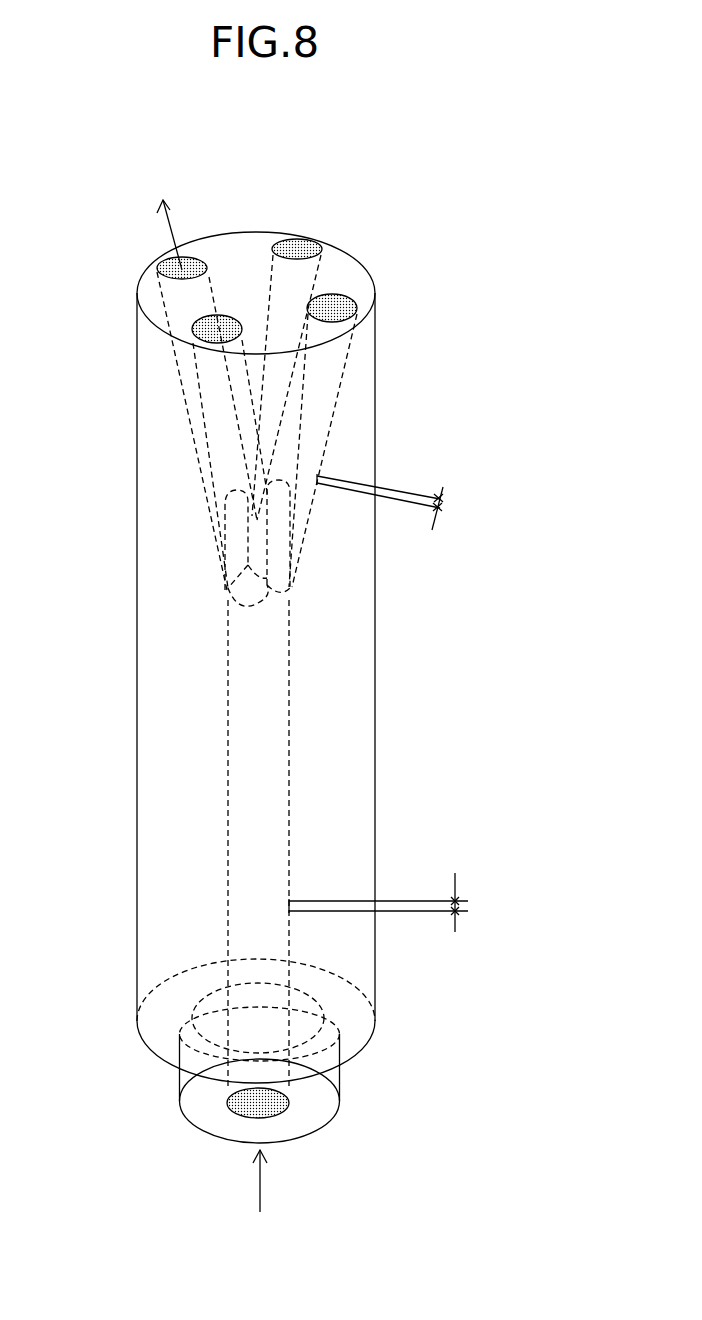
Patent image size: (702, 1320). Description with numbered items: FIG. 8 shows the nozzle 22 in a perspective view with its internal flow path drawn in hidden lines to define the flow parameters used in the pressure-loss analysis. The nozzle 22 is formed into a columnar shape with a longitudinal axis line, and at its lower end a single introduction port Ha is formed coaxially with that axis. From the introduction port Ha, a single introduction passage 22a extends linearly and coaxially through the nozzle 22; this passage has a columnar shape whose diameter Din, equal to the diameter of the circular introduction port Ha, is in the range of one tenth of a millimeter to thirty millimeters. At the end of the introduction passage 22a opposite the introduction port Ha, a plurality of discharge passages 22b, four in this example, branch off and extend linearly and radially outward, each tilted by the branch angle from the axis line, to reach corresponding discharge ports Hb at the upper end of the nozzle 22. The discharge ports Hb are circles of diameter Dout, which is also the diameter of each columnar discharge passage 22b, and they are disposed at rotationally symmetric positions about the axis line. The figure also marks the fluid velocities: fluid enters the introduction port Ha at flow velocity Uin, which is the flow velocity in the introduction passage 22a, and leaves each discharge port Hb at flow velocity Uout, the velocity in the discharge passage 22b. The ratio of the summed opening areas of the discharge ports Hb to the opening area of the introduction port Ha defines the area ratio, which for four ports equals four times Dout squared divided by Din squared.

The nozzle 22 is at (137, 791).
The introduction passage 22a is at (278, 763).
The discharge passages 22b is at (302, 279).
The introduction port Ha is at (227, 1104).
The discharge ports Hb is at (300, 243).
The diameter of introduction port Din is at (277, 1103).
The diameter of discharge port Dout is at (291, 244).
The inflow velocity Uin is at (239, 1181).
The outflow velocity Uout is at (143, 235).